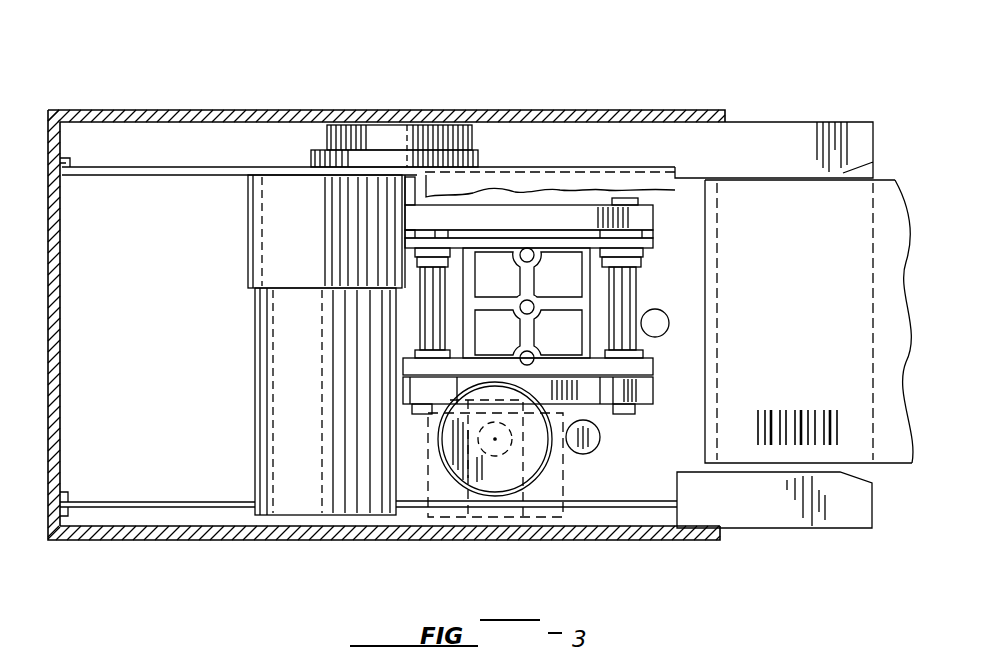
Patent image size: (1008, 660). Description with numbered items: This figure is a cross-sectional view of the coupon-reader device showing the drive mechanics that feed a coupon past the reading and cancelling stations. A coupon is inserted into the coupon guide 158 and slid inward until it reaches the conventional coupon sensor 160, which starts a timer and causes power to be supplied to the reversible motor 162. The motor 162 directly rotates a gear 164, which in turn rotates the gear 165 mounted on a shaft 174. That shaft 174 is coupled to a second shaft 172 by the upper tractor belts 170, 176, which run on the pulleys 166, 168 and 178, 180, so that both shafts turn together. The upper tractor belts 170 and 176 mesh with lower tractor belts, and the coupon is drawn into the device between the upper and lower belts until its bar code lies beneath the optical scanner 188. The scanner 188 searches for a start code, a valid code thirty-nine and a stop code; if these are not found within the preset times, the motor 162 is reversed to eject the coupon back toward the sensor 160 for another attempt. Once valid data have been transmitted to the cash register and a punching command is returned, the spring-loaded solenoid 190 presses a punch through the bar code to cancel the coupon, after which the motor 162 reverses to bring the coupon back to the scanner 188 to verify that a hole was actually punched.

The coupon guide 158 is at (809, 321).
The coupon sensor 160 is at (669, 333).
The reversible motor 162 is at (245, 253).
The gear 164 is at (362, 137).
The gear 165 is at (452, 86).
The pulley 166 is at (455, 200).
The pulley 168 is at (653, 202).
The upper tractor belt 170 is at (537, 215).
The shaft 172 is at (618, 294).
The shaft 174 is at (422, 320).
The upper tractor belt 176 is at (580, 390).
The pulley 178 is at (668, 437).
The pulley 180 is at (413, 407).
The optical scanner 188 is at (582, 456).
The solenoid 190 is at (453, 480).